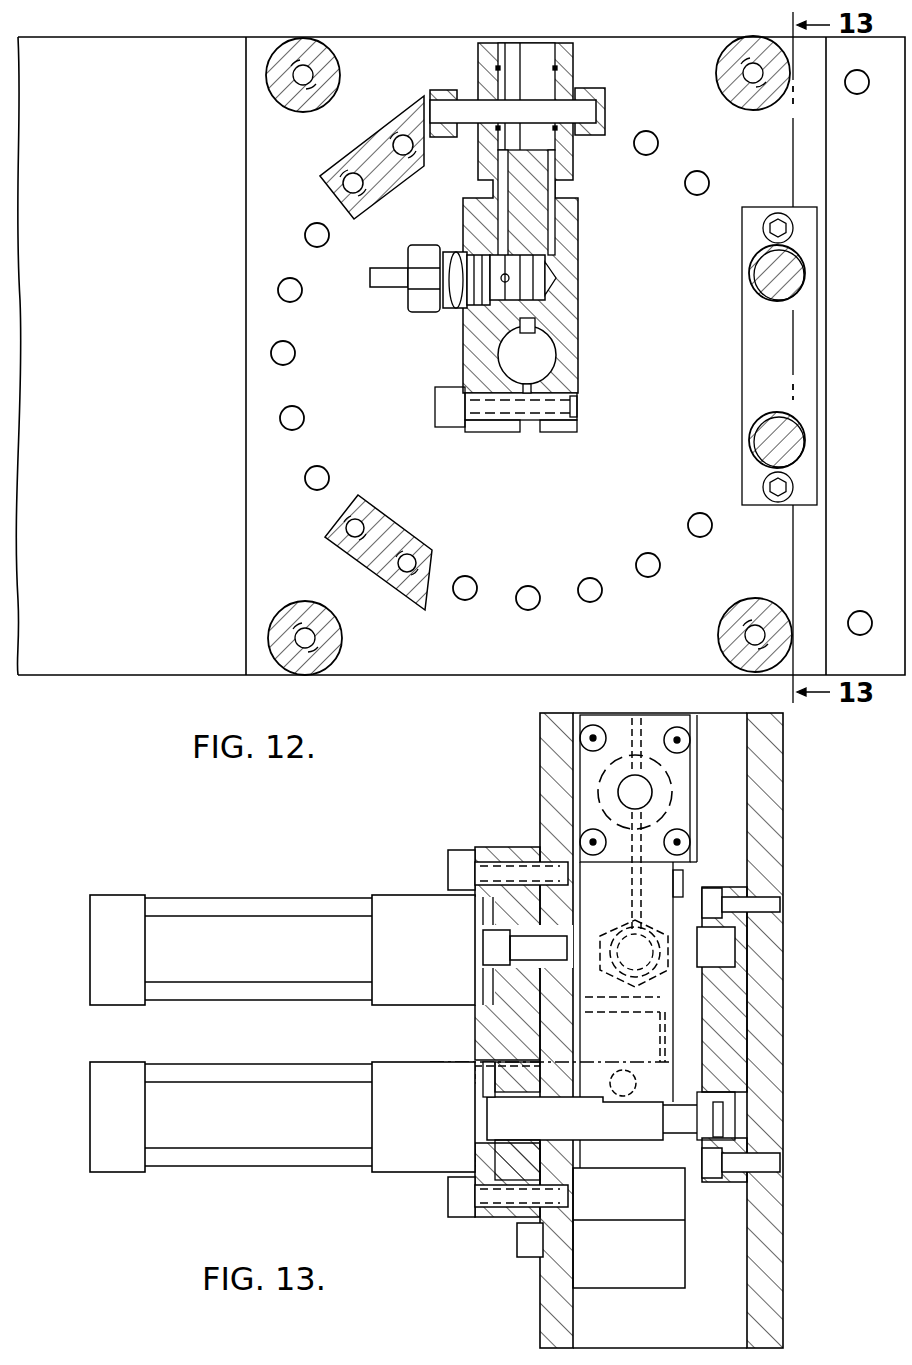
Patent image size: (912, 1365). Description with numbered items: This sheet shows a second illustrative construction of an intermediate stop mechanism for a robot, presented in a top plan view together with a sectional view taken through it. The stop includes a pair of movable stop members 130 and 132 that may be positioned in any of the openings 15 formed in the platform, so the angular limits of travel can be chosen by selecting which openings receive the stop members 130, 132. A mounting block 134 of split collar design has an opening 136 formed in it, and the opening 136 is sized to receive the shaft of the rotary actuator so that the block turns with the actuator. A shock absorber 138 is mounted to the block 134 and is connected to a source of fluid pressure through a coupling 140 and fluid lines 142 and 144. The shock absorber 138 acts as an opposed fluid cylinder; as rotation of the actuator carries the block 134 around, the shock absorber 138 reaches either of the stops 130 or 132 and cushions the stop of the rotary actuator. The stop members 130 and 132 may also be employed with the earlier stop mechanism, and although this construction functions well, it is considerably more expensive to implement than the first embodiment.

The central opening 15 is at (522, 588).
The movable stop member 130 is at (367, 158).
The movable stop member 132 is at (388, 545).
The mounting block 134 is at (551, 312).
The opening 136 is at (536, 366).
The shock absorber 138 is at (578, 98).
The coupling 140 is at (438, 212).
The fluid line 142 is at (510, 220).
The fluid line 144 is at (549, 236).